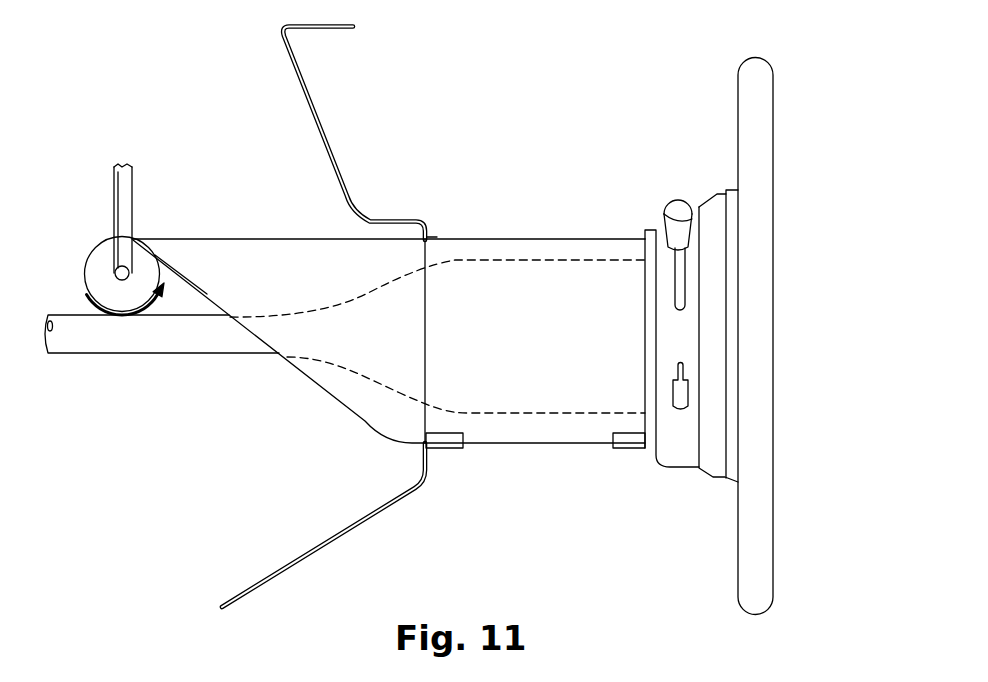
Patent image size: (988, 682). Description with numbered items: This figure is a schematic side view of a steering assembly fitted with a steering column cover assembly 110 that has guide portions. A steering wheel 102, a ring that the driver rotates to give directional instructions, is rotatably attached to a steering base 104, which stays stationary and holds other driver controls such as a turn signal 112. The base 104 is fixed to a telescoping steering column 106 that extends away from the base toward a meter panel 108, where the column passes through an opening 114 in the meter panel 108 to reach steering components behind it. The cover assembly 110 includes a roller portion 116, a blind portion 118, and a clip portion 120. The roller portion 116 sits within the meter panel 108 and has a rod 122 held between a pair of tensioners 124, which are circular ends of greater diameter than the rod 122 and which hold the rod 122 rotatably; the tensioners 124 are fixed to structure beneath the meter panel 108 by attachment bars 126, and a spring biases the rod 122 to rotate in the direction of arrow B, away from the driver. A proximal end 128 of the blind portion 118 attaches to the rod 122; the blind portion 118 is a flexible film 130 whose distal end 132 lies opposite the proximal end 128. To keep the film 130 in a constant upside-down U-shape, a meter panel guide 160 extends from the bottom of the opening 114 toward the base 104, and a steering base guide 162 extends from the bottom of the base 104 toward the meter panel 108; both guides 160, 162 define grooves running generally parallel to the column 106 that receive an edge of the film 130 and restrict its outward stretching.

The steering wheel 102 is at (757, 121).
The steering base 104 is at (698, 252).
The telescoping steering column 106 is at (550, 194).
The meter panel 108 is at (312, 165).
The steering column cover assembly 110 is at (487, 445).
The turn signal 112 is at (680, 398).
The opening 114 is at (425, 290).
The roller portion 116 is at (117, 130).
The blind portion 118 is at (263, 216).
The clip portion 120 is at (633, 207).
The rod 122 is at (146, 190).
The tensioners 124 is at (110, 258).
The attachment bars 126 is at (122, 198).
The proximal end 128 is at (158, 225).
The flexible film 130 is at (547, 377).
The distal end 132 is at (637, 465).
The meter panel guide 160 is at (443, 475).
The steering base guide 162 is at (596, 464).
The arrow B is at (88, 300).